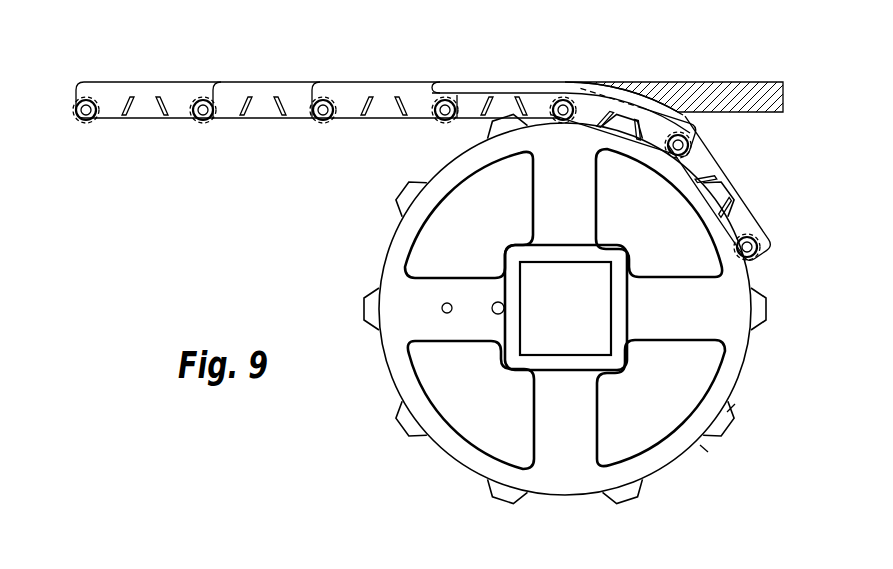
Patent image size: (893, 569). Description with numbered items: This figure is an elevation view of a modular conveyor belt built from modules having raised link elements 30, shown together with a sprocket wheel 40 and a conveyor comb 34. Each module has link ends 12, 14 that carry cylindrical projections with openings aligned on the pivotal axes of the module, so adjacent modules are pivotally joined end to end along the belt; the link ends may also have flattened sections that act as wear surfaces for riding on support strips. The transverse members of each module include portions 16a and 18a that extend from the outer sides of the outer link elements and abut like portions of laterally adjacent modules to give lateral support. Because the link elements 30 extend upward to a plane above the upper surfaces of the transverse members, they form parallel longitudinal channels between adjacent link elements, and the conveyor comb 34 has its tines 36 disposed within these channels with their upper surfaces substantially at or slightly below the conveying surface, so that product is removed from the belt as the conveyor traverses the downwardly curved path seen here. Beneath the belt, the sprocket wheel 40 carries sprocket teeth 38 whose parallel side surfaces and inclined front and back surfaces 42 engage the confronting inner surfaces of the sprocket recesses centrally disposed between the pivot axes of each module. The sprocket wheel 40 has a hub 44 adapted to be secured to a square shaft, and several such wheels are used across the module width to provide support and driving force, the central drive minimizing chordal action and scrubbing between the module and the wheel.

The link end 12 is at (210, 118).
The link end 14 is at (78, 110).
The portion of transverse member 16a is at (157, 107).
The portion of transverse member 18a is at (117, 108).
The link element 30 is at (242, 82).
The conveyor comb 34 is at (713, 84).
The tines 36 is at (482, 88).
The sprocket teeth 38 is at (717, 186).
The sprocket wheel 40 is at (738, 368).
The inclined front and back surfaces 42 is at (713, 190).
The hub 44 is at (517, 297).